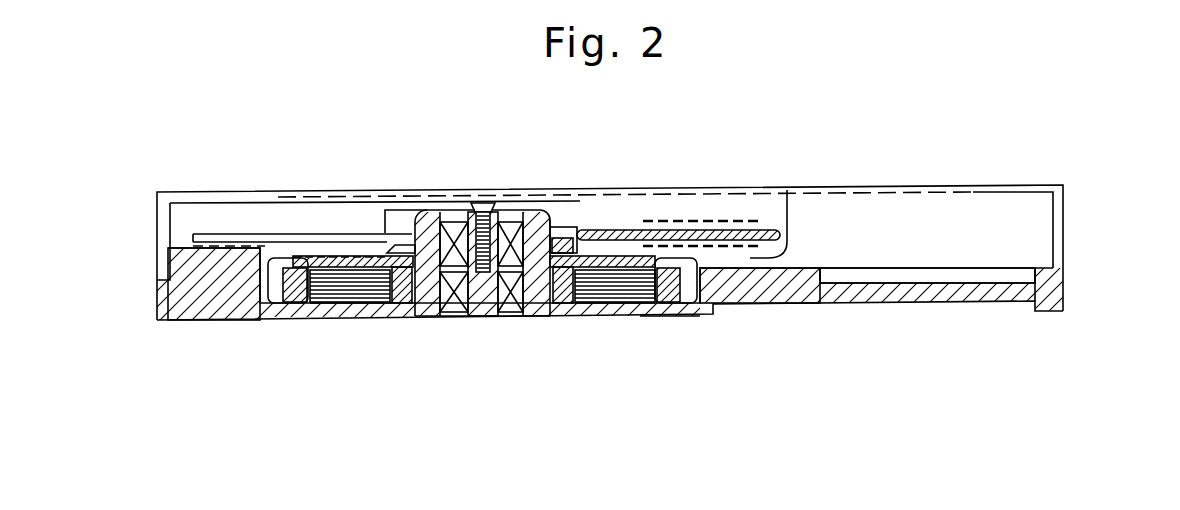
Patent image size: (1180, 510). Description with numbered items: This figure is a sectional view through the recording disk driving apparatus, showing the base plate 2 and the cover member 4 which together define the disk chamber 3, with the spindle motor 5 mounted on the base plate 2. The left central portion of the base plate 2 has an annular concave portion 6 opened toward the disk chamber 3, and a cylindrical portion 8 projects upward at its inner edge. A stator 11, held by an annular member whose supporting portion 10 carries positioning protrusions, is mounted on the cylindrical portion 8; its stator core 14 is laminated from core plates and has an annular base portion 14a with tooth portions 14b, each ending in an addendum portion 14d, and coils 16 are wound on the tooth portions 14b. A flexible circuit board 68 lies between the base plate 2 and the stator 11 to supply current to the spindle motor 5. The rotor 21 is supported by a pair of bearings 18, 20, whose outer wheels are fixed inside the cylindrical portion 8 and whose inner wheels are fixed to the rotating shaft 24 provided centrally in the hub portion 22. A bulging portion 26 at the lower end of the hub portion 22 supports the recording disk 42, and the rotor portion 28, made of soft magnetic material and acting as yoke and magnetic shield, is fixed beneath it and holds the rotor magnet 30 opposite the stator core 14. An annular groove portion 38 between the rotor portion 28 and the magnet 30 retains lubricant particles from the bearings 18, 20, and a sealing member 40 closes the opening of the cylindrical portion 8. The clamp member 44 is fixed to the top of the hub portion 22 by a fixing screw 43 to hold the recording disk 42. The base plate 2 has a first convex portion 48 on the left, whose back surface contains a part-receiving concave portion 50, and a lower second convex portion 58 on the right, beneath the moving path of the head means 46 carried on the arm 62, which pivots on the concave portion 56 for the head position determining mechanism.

The base plate 2 is at (1068, 288).
The disk chamber 3 is at (1035, 217).
The cover member 4 is at (937, 183).
The spindle motor 5 is at (377, 222).
The annular concave portion 6 is at (308, 303).
The cylindrical portion 8 is at (405, 303).
The supporting portion 10 is at (321, 303).
The stator 11 is at (367, 318).
The stator core 14 is at (607, 316).
The annular base portion 14a is at (555, 316).
The tooth portion 14b is at (632, 316).
The addendum portion 14d is at (647, 315).
The coils 16 is at (647, 316).
The bearing 18 is at (543, 316).
The bearing 20 is at (509, 316).
The rotor 21 is at (582, 227).
The hub portion 22 is at (444, 209).
The rotating shaft 24 is at (482, 316).
The bulging portion 26 is at (557, 227).
The rotor portion 28 is at (312, 256).
The rotor magnet 30 is at (290, 303).
The annular groove portion 38 is at (284, 256).
The sealing member 40 is at (447, 318).
The recording disk 42 is at (606, 232).
The fixing screw 43 is at (481, 203).
The clamp member 44 is at (523, 209).
The head means 46 is at (642, 206).
The first convex portion 48 is at (192, 244).
The part-receiving concave portion 50 is at (207, 322).
The concave portion for head position determining mechanism 56 is at (957, 281).
The second convex portion 58 is at (800, 266).
The arm 62 is at (740, 218).
The flexible circuit board 68 is at (592, 303).